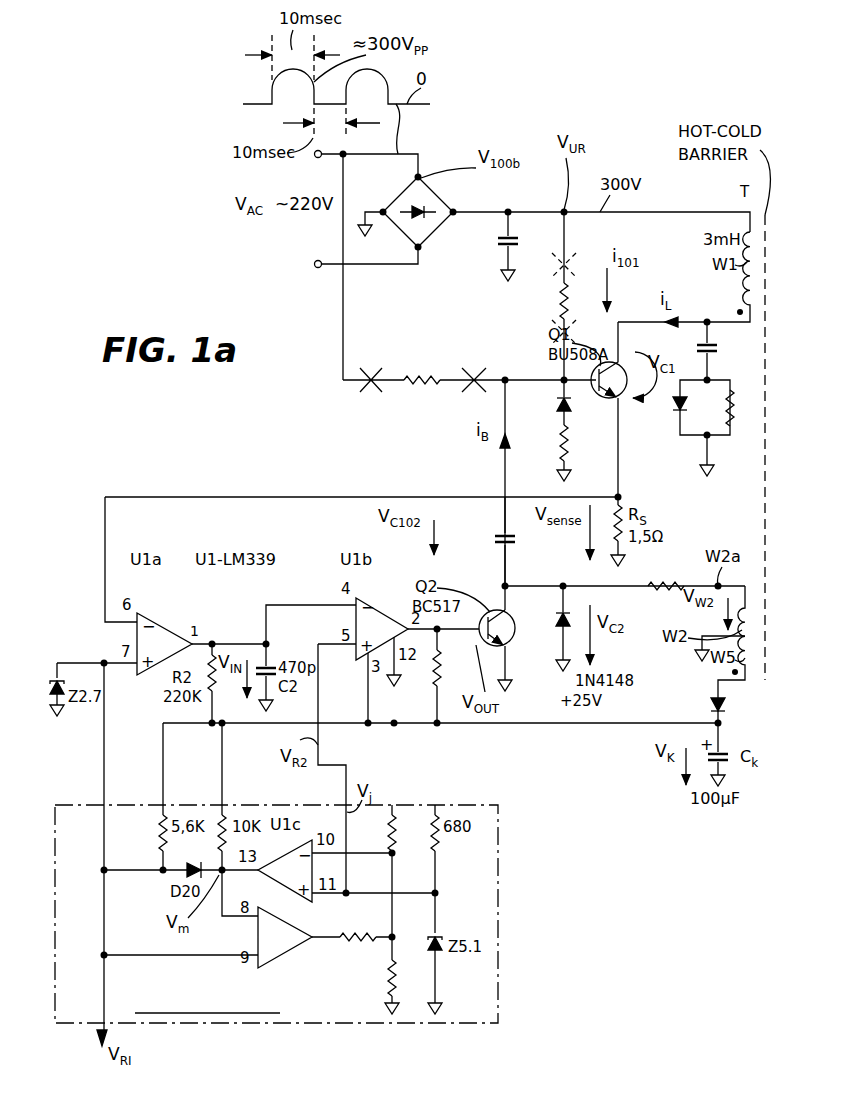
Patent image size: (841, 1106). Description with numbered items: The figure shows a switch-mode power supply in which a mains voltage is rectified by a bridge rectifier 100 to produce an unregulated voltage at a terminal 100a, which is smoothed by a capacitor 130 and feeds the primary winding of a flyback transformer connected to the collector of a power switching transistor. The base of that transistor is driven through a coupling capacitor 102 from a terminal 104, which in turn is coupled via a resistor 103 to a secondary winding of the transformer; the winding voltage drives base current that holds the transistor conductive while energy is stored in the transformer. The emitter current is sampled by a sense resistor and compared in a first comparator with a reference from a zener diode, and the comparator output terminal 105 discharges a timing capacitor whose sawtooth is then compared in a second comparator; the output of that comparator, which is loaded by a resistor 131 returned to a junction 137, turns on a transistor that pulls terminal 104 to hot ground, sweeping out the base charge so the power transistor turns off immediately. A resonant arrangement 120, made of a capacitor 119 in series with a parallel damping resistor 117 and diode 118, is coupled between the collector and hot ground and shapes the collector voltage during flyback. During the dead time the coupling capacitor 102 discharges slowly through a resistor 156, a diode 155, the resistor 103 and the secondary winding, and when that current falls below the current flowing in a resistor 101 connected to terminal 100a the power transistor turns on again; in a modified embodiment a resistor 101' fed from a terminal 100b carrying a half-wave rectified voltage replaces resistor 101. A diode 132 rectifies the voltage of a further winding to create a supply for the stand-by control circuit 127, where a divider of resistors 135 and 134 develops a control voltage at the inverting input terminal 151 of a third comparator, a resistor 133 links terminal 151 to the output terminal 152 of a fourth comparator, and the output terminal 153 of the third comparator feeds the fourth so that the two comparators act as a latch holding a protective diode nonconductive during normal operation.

The bridge rectifier 100 is at (433, 207).
The terminal 100a is at (567, 214).
The terminal of bridge rectifier 100b is at (421, 175).
The resistor 101 is at (564, 296).
The resistor 101' is at (424, 380).
The coupling capacitor 102 is at (501, 537).
The resistor 103 is at (655, 585).
The terminal 104 is at (502, 582).
The output terminal 105 is at (213, 642).
The damping resistor 117 is at (735, 426).
The diode 118 is at (679, 396).
The capacitor 119 is at (710, 352).
The arrangement 120 is at (686, 349).
The control circuit 127 is at (498, 860).
The smoothing capacitor 220 microfarad 130 is at (497, 240).
The resistor 1.8K 131 is at (437, 640).
The diode 132 is at (720, 700).
The resistor 133 is at (373, 933).
The resistor 134 is at (418, 980).
The resistor 135 is at (393, 856).
The junction node 137 is at (437, 690).
The inverting input terminal 151 is at (391, 855).
The output terminal 152 is at (320, 942).
The output terminal 153 is at (220, 877).
The diode 155 is at (558, 400).
The resistor 156 is at (571, 448).